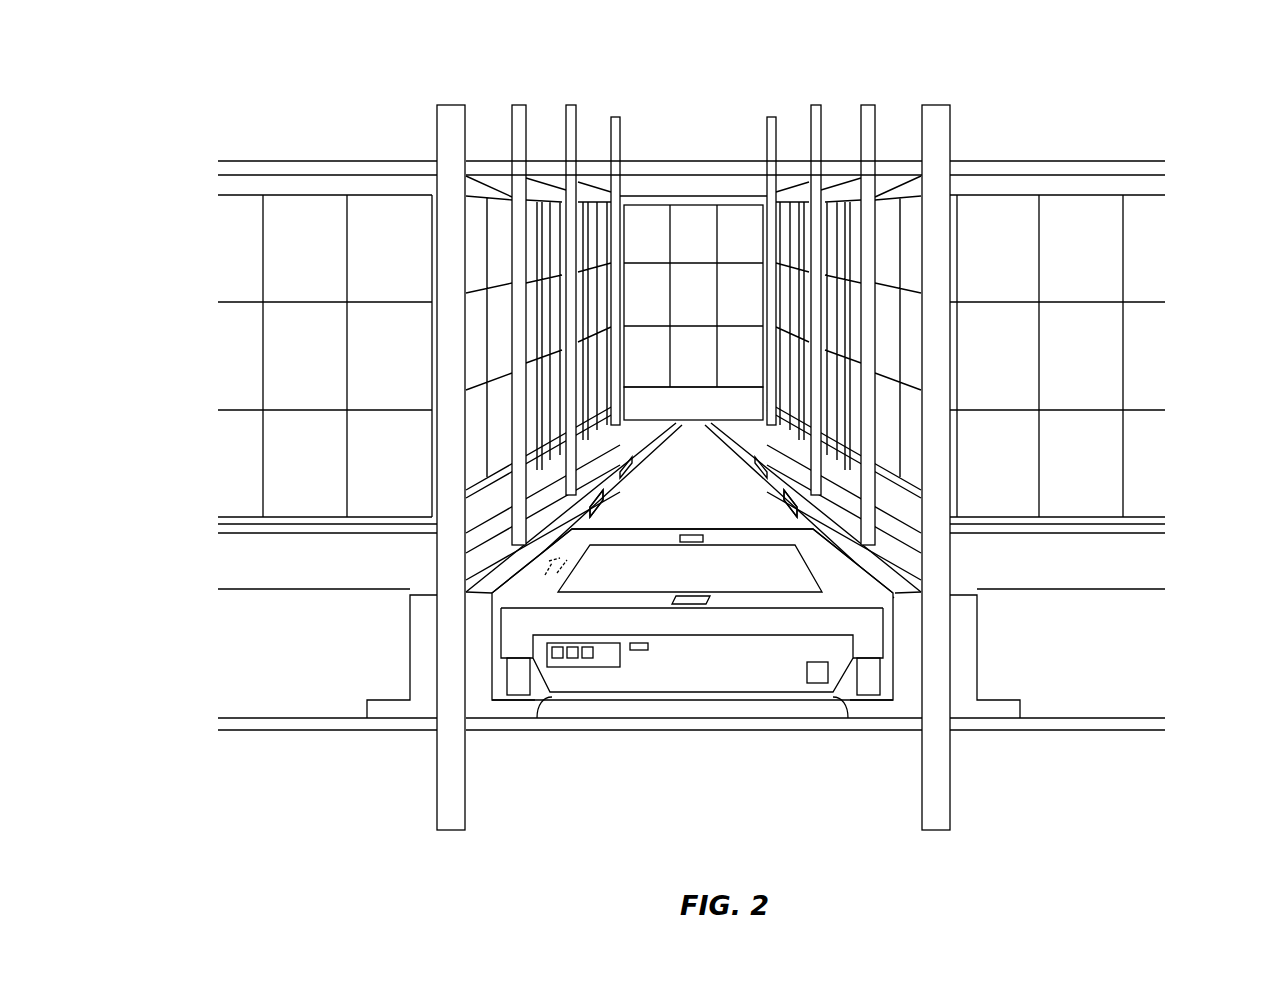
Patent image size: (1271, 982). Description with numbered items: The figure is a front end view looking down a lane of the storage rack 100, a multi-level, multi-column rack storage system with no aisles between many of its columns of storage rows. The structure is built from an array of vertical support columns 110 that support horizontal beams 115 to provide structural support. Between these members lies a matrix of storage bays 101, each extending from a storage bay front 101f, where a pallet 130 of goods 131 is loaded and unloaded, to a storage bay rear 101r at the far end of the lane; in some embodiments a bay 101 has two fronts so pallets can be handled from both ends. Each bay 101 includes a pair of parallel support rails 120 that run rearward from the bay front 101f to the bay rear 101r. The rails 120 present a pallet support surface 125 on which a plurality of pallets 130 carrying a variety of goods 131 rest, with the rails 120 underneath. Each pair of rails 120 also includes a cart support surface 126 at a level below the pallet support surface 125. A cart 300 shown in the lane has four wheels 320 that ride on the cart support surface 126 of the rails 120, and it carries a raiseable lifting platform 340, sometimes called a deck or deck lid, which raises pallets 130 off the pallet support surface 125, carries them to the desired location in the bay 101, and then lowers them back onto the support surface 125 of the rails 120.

The storage rack 100 is at (558, 64).
The storage bay 101 is at (667, 756).
The storage bay front 101f is at (1128, 660).
The storage bay rear 101r is at (700, 486).
The vertical support column 110 is at (447, 130).
The horizontal beam 115 is at (355, 165).
The support rail 120 is at (407, 635).
The pallet support surface 125 is at (572, 505).
The cart support surface 126 is at (765, 503).
The pallet 130 is at (712, 401).
The goods 131 is at (733, 225).
The cart 300 is at (778, 669).
The wheel 320 is at (520, 686).
The lifting platform 340 is at (768, 565).